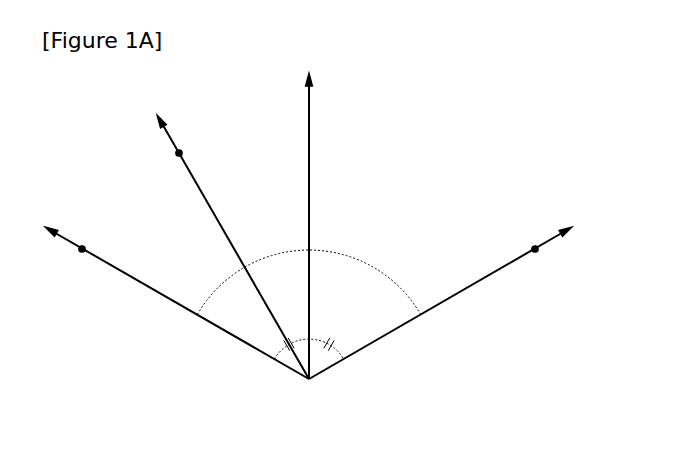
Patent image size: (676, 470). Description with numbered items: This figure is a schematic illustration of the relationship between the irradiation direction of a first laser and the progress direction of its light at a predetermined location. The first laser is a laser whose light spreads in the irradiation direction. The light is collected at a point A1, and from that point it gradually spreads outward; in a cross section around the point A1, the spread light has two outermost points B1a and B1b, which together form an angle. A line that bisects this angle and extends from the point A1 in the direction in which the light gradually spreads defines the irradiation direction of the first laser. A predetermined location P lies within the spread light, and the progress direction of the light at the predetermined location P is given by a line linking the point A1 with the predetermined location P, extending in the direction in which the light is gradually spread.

The predetermined location P is at (189, 148).
The outermost point B1a is at (177, 303).
The outermost point B1b is at (440, 303).
The point at which the light is collected A1 is at (308, 375).